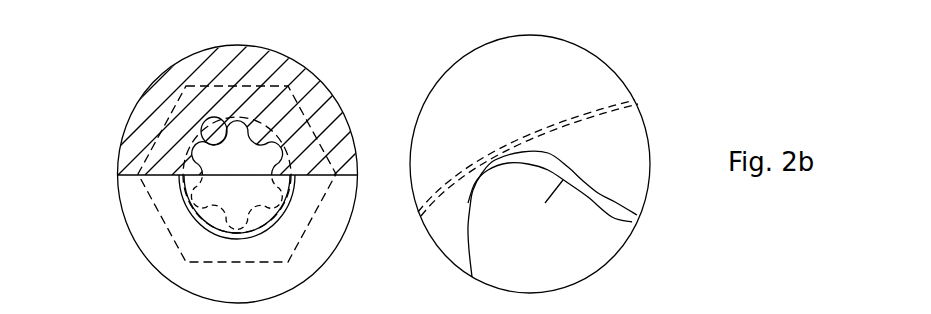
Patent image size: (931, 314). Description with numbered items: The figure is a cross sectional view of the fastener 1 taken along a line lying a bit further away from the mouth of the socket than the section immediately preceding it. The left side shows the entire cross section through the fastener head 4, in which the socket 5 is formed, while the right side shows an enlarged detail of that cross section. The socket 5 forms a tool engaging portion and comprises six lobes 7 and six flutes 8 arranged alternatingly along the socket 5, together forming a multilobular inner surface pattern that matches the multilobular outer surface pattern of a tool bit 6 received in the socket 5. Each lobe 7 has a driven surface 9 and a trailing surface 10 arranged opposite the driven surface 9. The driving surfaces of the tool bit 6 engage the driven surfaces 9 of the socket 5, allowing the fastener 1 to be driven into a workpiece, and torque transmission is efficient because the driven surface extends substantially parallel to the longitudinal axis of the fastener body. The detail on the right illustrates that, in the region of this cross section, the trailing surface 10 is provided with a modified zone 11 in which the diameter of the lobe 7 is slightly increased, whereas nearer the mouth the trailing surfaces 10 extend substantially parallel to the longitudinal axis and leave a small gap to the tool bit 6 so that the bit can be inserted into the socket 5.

The fastener 1 is at (78, 196).
The fastener head 4 is at (148, 112).
The socket 5 is at (270, 147).
The tool bit 6 is at (242, 178).
The lobe 7 is at (200, 146).
The flute 8 is at (233, 118).
The driven surface 9 is at (468, 240).
The trailing surface 10 is at (592, 187).
The modified zone 11 is at (583, 182).